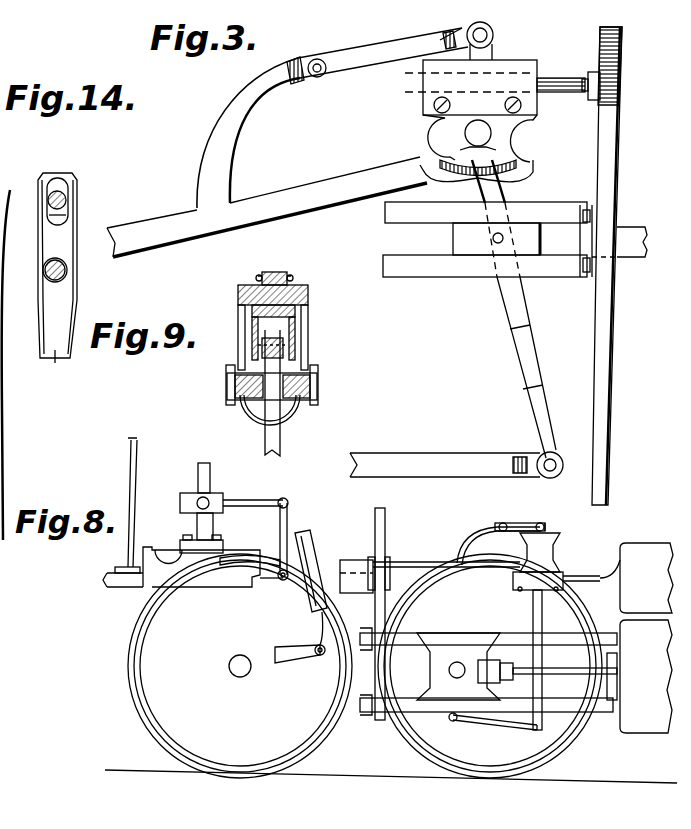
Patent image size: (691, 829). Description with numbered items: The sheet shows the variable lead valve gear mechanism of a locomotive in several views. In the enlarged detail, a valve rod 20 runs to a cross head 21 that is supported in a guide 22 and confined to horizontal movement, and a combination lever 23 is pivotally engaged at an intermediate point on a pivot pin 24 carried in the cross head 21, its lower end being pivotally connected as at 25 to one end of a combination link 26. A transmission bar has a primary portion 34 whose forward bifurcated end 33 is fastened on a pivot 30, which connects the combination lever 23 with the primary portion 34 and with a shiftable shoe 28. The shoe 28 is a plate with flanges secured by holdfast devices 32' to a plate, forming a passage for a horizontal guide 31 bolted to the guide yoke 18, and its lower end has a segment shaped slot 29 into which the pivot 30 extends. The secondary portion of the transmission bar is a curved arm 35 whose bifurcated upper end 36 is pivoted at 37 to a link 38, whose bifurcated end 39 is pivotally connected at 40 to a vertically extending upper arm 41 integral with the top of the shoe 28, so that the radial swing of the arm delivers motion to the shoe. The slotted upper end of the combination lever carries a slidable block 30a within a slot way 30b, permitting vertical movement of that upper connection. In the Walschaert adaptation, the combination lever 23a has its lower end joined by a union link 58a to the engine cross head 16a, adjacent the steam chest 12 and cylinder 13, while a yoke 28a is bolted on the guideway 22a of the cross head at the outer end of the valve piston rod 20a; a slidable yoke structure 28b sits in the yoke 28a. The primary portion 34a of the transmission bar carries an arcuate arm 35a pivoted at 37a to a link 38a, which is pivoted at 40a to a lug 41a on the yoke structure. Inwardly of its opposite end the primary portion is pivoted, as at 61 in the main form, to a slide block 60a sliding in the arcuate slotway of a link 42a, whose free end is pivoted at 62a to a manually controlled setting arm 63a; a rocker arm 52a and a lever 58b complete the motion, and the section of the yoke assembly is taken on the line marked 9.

In FIG. 3, the primary portion of transmission bar 34 is at (138, 216).
In FIG. 3, the curved arm 35 is at (222, 150).
In FIG. 3, the bifurcated upper end 36 is at (296, 84).
In FIG. 3, the pivot 37 is at (318, 77).
In FIG. 3, the link 38 is at (388, 37).
In FIG. 3, the bifurcated end 39 is at (456, 38).
In FIG. 3, the pivot 40 is at (489, 30).
In FIG. 3, the upper arm 41 is at (494, 52).
In FIG. 3, the holdfast devices 32' is at (480, 95).
In FIG. 3, the guide 31 is at (559, 86).
In FIG. 3, the guide yoke 18 is at (595, 333).
In FIG. 3, the valve rod 20 is at (636, 235).
In FIG. 3, the shiftable shoe 28 is at (455, 126).
In FIG. 3, the segment shaped slot 29 is at (517, 160).
In FIG. 3, the bifurcated end 33 is at (438, 162).
In FIG. 3, the pivot 30 is at (478, 165).
In FIG. 14, the pivot 30 is at (48, 197).
In FIG. 3, the combination lever 23 is at (537, 413).
In FIG. 14, the combination lever 23 is at (63, 278).
In FIG. 3, the guide 22 is at (395, 246).
In FIG. 3, the cross head 21 is at (458, 240).
In FIG. 3, the pivot pin 24 is at (503, 233).
In FIG. 14, the pivot pin 24 is at (67, 278).
In FIG. 3, the pivotal connection 25 is at (538, 462).
In FIG. 3, the combination link 26 is at (436, 468).
In FIG. 14, the slidable block 30a is at (68, 188).
In FIG. 9, the slidable block 30a is at (285, 350).
In FIG. 14, the slot way 30b is at (60, 218).
In FIG. 9, the link 38a is at (278, 270).
In FIG. 8, the link 38a is at (520, 517).
In FIG. 9, the pivot 40a is at (257, 276).
In FIG. 8, the pivot 40a is at (542, 523).
In FIG. 9, the lug 41a is at (292, 279).
In FIG. 8, the lug 41a is at (548, 528).
In FIG. 9, the slidable yoke structure 28b is at (308, 297).
In FIG. 9, the yoke 28a is at (296, 332).
In FIG. 8, the yoke 28a is at (520, 552).
In FIG. 9, the primary portion of transmission bar 34a is at (243, 362).
In FIG. 8, the primary portion of transmission bar 34a is at (425, 556).
In FIG. 9, the guideway 22a is at (230, 385).
In FIG. 8, the guideway 22a is at (600, 592).
In FIG. 9, the combination lever 23a is at (281, 440).
In FIG. 8, the combination lever 23a is at (541, 688).
In FIG. 8, the setting arm 63a is at (268, 535).
In FIG. 8, the pivotal connection 61 is at (292, 565).
In FIG. 8, the link 42a is at (314, 543).
In FIG. 8, the slide block 60a is at (287, 585).
In FIG. 8, the pivot 62a is at (278, 580).
In FIG. 8, the pin 52a is at (325, 640).
In FIG. 8, the lever 58b is at (288, 662).
In FIG. 8, the arcuate arm 35a is at (466, 538).
In FIG. 8, the pivot 37a is at (502, 522).
In FIG. 8, the valve piston rod 20a is at (584, 575).
In FIG. 8, the steam chest 12 is at (648, 552).
In FIG. 8, the cylinder 13 is at (646, 676).
In FIG. 8, the post 9 is at (539, 523).
In FIG. 8, the engine cross head 16a is at (437, 672).
In FIG. 8, the union link 58a is at (496, 728).